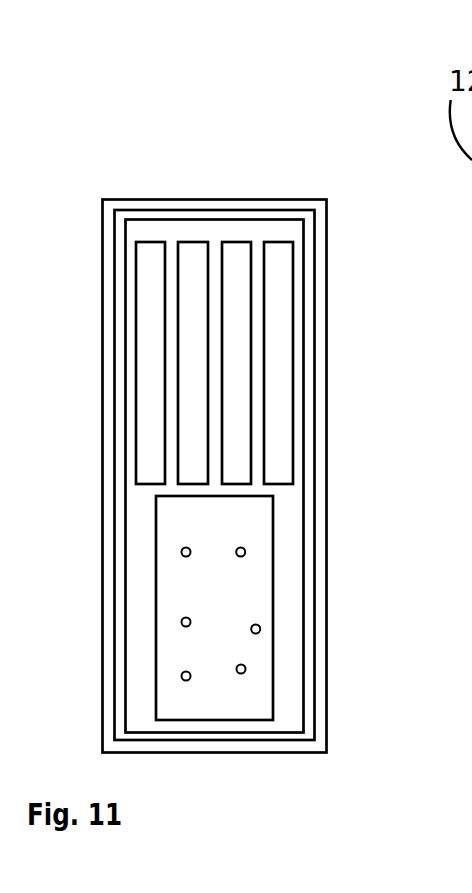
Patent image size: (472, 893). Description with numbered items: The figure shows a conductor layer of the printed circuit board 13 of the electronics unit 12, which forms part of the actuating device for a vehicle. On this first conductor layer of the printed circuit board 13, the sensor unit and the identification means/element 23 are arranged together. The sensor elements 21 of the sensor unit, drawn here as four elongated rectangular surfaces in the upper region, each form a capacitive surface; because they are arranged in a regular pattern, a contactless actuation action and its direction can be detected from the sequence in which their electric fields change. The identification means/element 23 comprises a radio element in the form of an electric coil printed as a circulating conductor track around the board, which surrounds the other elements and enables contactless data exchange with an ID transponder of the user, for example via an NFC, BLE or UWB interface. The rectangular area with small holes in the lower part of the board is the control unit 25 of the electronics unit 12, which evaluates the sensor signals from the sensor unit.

The electronics unit 12 is at (82, 185).
The sensor elements 21 is at (190, 246).
The identification means/element 23 is at (307, 387).
The printed circuit board 13 is at (295, 529).
The control unit 25 is at (258, 688).